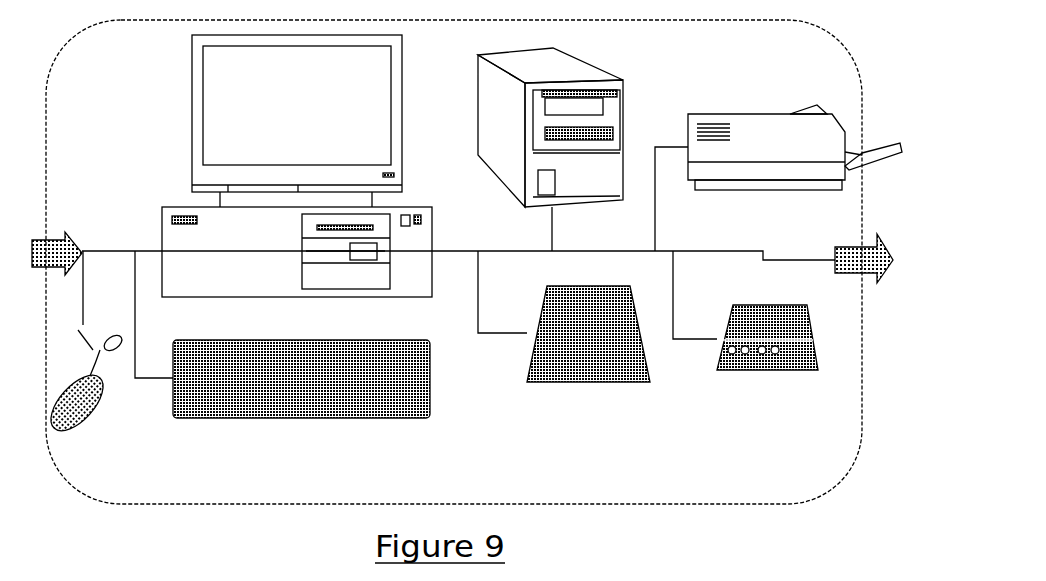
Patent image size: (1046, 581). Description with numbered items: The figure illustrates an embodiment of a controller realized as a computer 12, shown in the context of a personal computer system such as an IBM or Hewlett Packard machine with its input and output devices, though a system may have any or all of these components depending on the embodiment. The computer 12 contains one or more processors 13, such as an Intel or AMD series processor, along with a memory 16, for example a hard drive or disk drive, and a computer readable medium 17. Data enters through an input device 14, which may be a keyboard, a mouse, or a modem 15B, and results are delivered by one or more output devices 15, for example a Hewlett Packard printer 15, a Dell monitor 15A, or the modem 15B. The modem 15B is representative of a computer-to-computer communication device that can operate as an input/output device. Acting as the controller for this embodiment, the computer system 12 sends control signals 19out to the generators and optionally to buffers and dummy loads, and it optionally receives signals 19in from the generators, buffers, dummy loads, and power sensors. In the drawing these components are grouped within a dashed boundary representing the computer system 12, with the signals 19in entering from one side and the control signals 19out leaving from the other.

The computer 12 is at (878, 421).
The processor 13 is at (131, 221).
The input device 14 is at (238, 440).
The output device 15 is at (790, 88).
The monitor 15A is at (161, 100).
The modem 15B is at (778, 405).
The memory 16 is at (582, 405).
The computer readable medium 17 is at (652, 80).
The in signals 19in is at (52, 273).
The control signals out 19out is at (880, 280).